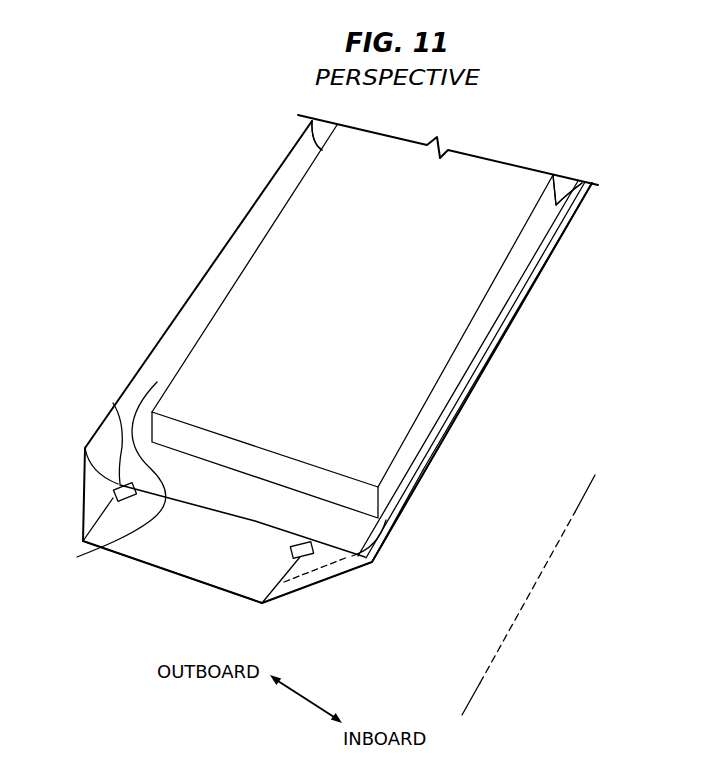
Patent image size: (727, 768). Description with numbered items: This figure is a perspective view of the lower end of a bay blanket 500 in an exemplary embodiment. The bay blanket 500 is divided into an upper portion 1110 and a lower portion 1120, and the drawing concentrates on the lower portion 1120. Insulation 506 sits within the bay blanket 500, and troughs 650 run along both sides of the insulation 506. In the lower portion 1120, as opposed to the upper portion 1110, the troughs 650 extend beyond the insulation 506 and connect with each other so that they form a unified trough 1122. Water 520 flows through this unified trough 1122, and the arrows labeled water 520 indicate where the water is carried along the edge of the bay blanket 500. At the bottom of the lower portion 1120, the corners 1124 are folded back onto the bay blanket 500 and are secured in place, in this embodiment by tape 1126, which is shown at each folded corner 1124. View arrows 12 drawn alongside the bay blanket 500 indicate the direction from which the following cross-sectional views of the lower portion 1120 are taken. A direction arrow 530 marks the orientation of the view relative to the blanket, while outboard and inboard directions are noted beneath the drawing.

The bay blanket 500 is at (509, 144).
The insulation 506 is at (362, 430).
The troughs 650 is at (296, 171).
The tape 1126 is at (113, 403).
The corners 1124 is at (97, 502).
The water 520 is at (150, 519).
The unified trough 1122 is at (152, 566).
The upper portion 1110 is at (459, 537).
The lower portion 1120 is at (452, 540).
The direction arrow 530 is at (620, 411).
The view arrows 12 is at (563, 467).